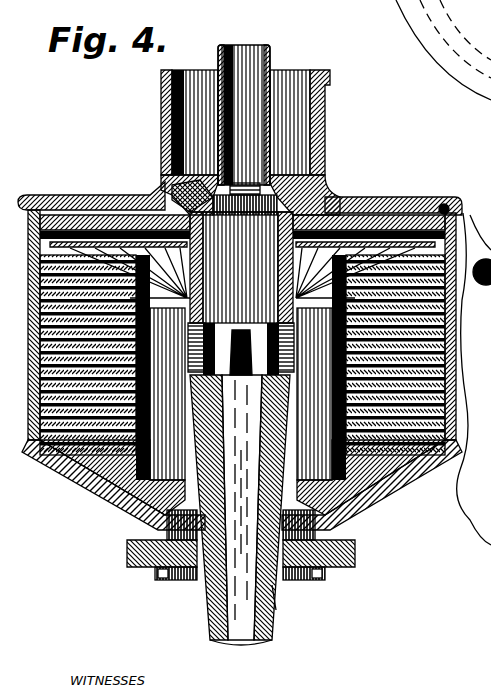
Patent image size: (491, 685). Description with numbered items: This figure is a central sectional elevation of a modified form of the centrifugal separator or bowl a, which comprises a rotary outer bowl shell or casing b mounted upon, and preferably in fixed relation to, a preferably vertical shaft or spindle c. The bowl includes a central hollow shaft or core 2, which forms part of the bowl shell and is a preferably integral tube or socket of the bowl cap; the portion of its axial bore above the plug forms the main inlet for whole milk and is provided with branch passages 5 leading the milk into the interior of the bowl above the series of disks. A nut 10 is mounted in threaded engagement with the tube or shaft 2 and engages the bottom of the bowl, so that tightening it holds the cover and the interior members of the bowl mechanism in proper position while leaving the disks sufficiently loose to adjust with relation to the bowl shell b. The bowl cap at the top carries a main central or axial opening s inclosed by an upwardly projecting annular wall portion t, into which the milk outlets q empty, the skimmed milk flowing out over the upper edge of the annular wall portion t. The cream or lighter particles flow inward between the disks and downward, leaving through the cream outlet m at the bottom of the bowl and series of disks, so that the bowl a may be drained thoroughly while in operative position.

The upwardly projecting annular wall portion t is at (325, 120).
The main central or axial opening s is at (285, 92).
The milk outlet q is at (170, 198).
The centrifugal separator or bowl a is at (378, 200).
The branch passages 5 is at (276, 335).
The rotary outer bowl shell or rotary casing b is at (105, 480).
The cream outlet m is at (325, 532).
The nut 10 is at (355, 556).
The shaft or spindle c is at (214, 622).
The central hollow shaft or core 2 is at (280, 598).